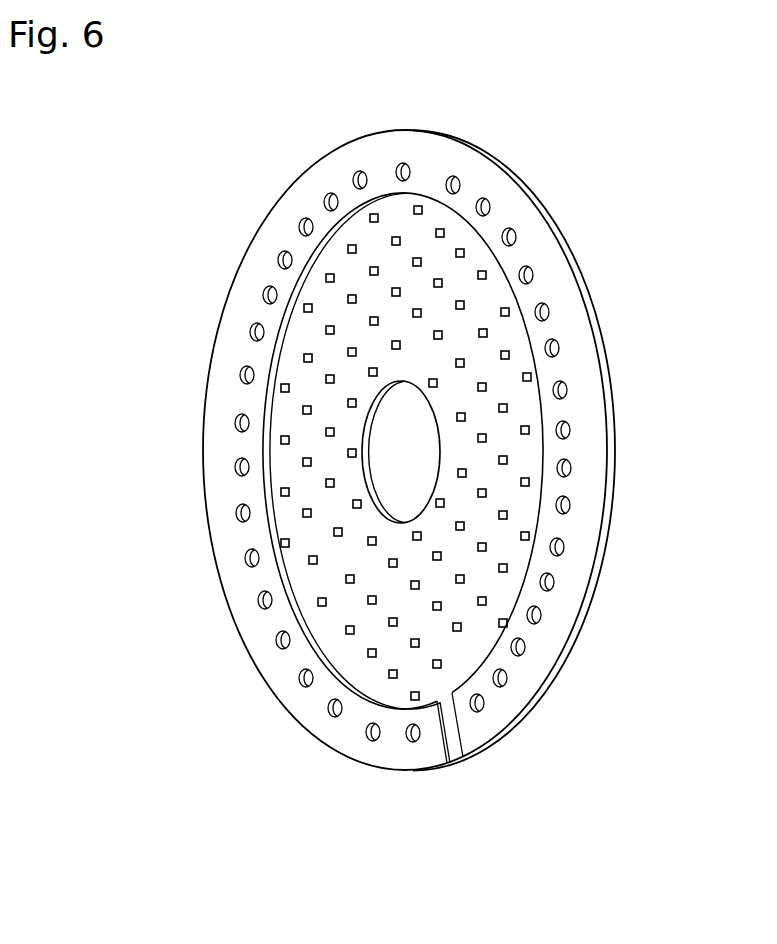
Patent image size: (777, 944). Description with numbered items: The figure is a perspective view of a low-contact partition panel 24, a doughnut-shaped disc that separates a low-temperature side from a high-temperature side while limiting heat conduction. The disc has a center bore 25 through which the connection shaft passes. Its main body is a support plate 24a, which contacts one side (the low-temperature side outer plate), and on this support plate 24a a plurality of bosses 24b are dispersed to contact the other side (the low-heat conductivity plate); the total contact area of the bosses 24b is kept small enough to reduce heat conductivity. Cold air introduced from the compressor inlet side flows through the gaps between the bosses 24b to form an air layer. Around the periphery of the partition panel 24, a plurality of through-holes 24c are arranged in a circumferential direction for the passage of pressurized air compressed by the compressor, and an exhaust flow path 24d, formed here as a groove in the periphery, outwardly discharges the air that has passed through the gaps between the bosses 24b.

The low-contact partition panel 24 is at (252, 181).
The support plate 24a is at (490, 292).
The bosses 24b is at (303, 410).
The through-holes 24c is at (266, 291).
The exhaust flow path 24d is at (455, 738).
The center bore 25 is at (380, 455).